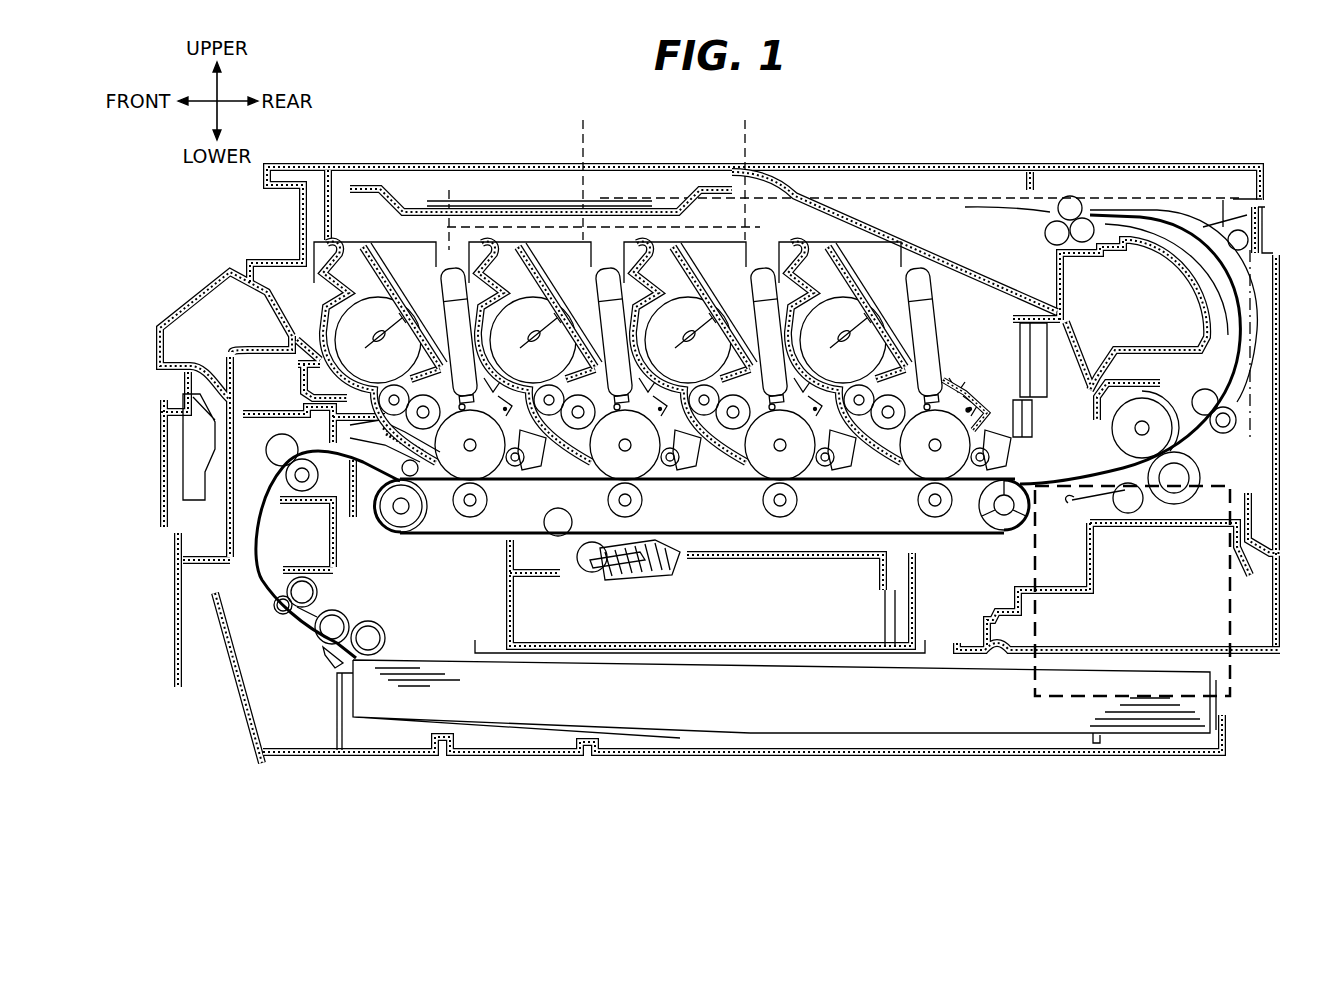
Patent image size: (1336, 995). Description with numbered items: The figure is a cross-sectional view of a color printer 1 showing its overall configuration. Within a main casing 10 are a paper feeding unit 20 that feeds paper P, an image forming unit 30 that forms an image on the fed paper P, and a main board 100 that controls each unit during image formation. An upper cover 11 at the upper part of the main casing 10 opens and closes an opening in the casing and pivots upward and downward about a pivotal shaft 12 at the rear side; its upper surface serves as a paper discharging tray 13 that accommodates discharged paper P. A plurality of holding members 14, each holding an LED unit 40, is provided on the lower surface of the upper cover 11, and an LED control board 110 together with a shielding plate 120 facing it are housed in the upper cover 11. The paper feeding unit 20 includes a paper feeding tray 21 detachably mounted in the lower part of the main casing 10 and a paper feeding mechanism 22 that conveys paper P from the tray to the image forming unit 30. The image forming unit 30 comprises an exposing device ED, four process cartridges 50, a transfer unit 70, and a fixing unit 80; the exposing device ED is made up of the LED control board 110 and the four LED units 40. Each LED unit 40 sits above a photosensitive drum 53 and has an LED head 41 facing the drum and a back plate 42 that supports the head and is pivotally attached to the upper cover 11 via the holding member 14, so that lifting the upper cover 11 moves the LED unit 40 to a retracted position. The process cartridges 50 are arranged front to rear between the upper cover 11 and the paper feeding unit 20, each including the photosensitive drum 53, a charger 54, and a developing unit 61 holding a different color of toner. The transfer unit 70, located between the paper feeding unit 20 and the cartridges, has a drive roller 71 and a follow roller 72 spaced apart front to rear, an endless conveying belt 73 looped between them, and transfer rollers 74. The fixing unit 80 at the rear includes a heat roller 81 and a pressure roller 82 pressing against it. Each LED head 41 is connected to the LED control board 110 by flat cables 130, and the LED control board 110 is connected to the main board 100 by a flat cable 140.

The color printer 1 is at (1032, 118).
The main casing 10 is at (1282, 300).
The upper cover 11 is at (656, 162).
The pivotal shaft 12 is at (1248, 240).
The paper discharging tray 13 is at (808, 180).
The holding member 14 is at (456, 266).
The paper feeding unit 20 is at (247, 736).
The paper feeding tray 21 is at (243, 703).
The paper feeding mechanism 22 is at (309, 633).
The image forming unit 30 is at (312, 302).
The LED unit 40 is at (433, 317).
The LED head 41 is at (935, 365).
The back plate 42 is at (938, 333).
The process cartridge 50 is at (378, 246).
The photosensitive drum 53 is at (460, 462).
The charger 54 is at (979, 399).
The developing unit 61 is at (862, 432).
The transfer unit 70 is at (930, 542).
The drive roller 71 is at (1010, 533).
The follow roller 72 is at (394, 534).
The conveying belt 73 is at (430, 536).
The transfer roller 74 is at (489, 500).
The fixing unit 80 is at (1206, 458).
The heat roller 81 is at (1167, 433).
The pressure roller 82 is at (1200, 477).
The main board 100 is at (1232, 683).
The LED control board 110 is at (520, 200).
The shielding plate 120 is at (444, 183).
The flat cable 130 is at (755, 240).
The flat cable 140 is at (1195, 200).
The exposing device ED is at (492, 190).
The paper P is at (993, 210).